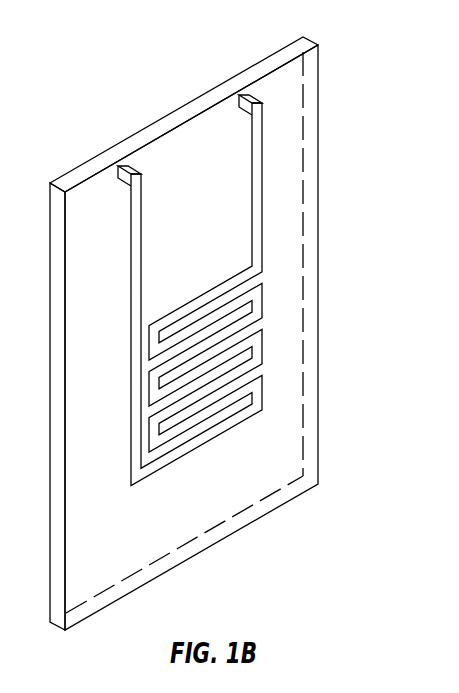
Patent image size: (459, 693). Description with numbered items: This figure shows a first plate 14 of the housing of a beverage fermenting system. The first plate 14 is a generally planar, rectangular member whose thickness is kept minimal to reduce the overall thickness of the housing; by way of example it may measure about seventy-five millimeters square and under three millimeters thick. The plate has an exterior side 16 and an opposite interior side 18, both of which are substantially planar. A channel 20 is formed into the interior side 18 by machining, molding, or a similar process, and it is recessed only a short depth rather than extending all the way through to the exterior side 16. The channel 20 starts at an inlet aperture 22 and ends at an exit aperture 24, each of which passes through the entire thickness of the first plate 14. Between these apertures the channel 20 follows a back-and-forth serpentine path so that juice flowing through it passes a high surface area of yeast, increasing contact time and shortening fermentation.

The first plate 14 is at (209, 333).
The exterior side 16 is at (140, 131).
The interior side 18 is at (288, 210).
The channel 20 is at (263, 352).
The inlet aperture 22 is at (262, 114).
The exit aperture 24 is at (141, 185).